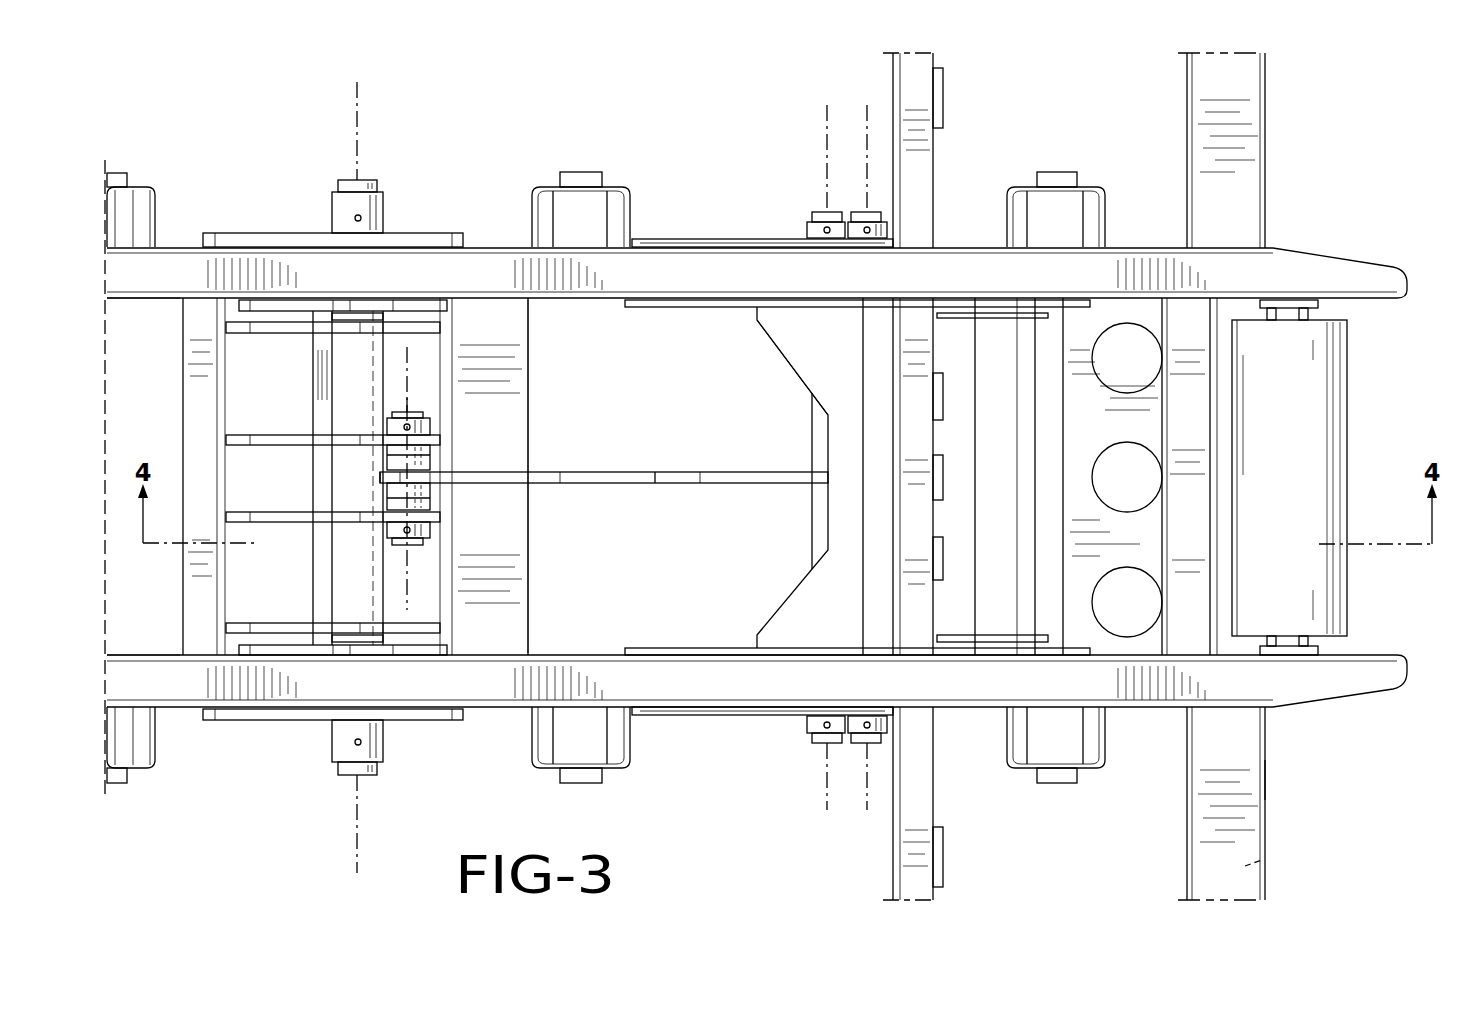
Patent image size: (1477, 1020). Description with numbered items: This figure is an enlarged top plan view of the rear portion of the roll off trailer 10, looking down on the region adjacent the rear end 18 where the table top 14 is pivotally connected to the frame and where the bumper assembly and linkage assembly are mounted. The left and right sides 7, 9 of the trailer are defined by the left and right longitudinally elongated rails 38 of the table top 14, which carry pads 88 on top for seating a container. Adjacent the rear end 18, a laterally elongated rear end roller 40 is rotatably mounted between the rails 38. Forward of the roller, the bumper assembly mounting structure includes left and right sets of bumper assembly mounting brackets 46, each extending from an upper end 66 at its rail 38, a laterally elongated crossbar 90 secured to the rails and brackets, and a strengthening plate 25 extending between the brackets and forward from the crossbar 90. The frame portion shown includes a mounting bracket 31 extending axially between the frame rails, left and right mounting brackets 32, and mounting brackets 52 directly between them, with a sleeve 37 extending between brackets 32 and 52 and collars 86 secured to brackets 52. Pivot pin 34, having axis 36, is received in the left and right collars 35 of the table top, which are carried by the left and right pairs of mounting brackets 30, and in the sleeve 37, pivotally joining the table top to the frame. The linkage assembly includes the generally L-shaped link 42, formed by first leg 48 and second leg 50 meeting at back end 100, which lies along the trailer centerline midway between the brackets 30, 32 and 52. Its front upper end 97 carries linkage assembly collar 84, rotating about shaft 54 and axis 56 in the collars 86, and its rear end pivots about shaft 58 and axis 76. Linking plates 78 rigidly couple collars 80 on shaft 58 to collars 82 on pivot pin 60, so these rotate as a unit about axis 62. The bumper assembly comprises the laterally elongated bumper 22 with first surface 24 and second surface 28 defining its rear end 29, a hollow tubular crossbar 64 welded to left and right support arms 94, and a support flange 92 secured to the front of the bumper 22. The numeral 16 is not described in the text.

The left side 7 is at (735, 850).
The right side 9 is at (648, 104).
The roll off trailer 10 is at (248, 104).
The table top 14 is at (485, 712).
The bearing assembly 16 is at (330, 752).
The rear end 18 is at (1418, 268).
The bumper 22 is at (1278, 770).
The first surface 24 is at (1262, 860).
The strengthening plate 25 is at (783, 338).
The second surface 28 is at (1268, 812).
The rear end of bumper assembly 29 is at (1278, 132).
The mounting brackets 30 is at (235, 233).
The mounting bracket 31 is at (245, 355).
The mounting brackets 32 is at (290, 325).
The pivot pin 34 is at (348, 178).
The collars 35 is at (385, 208).
The axis 36 is at (357, 92).
The sleeve 37 is at (345, 410).
The rails 38 is at (140, 300).
The rear end roller 40 is at (1347, 405).
The link 42 is at (655, 445).
The bumper assembly mounting brackets 46 is at (831, 478).
The first leg 48 is at (563, 458).
The second leg 50 is at (604, 505).
The mounting brackets 52 is at (292, 440).
The shaft 54 is at (410, 407).
The axis 56 is at (408, 357).
The shaft 58 is at (880, 222).
The pivot pin 60 is at (820, 212).
The axis 62 is at (822, 128).
The crossbar 64 is at (1022, 480).
The upper end 66 is at (700, 236).
The axis 76 is at (868, 120).
The linking plates 78 is at (805, 236).
The collars 80 is at (890, 228).
The collars 82 is at (805, 222).
The linkage assembly collar 84 is at (430, 465).
The collars 86 is at (430, 425).
The pads 88 is at (672, 268).
The crossbar 90 is at (888, 84).
The support flange 92 is at (1140, 525).
The support arms 94 is at (1000, 326).
The front upper end 97 is at (380, 480).
The back end of first leg 100 is at (625, 483).